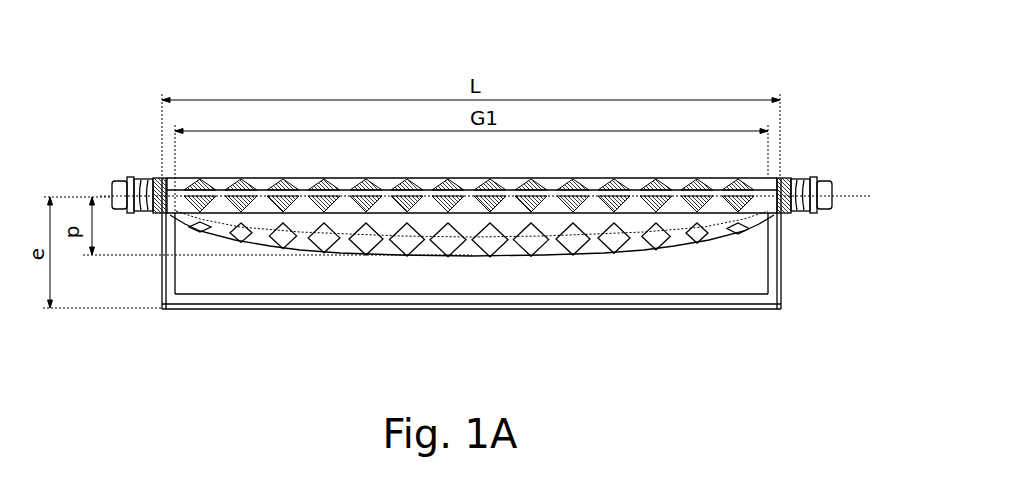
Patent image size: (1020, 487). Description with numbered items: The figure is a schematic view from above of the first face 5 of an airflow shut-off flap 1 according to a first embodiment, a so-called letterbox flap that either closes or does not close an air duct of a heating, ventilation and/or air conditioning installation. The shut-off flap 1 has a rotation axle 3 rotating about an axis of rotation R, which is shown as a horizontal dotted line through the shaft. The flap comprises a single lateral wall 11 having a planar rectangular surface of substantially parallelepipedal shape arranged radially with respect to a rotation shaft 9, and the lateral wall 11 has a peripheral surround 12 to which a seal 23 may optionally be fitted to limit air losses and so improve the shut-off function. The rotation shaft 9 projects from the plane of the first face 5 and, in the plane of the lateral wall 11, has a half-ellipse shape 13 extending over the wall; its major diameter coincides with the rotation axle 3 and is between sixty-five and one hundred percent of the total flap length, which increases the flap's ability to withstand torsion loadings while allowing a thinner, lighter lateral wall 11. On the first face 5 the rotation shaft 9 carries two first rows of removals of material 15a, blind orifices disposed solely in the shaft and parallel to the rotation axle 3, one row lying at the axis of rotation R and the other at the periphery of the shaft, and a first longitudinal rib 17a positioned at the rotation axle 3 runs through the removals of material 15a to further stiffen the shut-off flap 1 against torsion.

The airflow shut-off flap 1 is at (814, 62).
The rotation axle 3 is at (797, 218).
The first face 5 is at (792, 273).
The rotation shaft 9 is at (598, 266).
The lateral wall 11 is at (687, 278).
The peripheral surround 12 is at (470, 298).
The half-ellipse shape 13 is at (393, 258).
The first row of removals of material 15a is at (290, 245).
The first longitudinal rib 17a is at (229, 184).
The seal 23 is at (557, 179).
The axis of rotation R is at (849, 193).